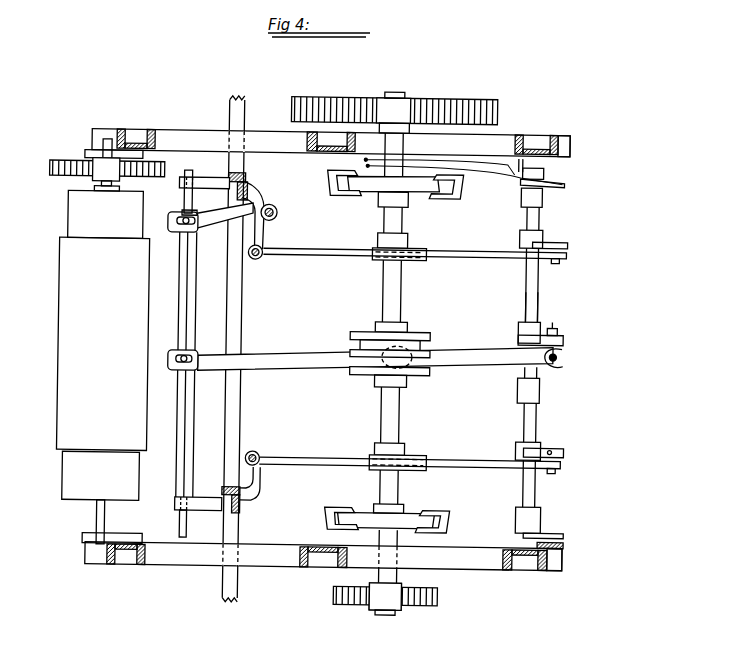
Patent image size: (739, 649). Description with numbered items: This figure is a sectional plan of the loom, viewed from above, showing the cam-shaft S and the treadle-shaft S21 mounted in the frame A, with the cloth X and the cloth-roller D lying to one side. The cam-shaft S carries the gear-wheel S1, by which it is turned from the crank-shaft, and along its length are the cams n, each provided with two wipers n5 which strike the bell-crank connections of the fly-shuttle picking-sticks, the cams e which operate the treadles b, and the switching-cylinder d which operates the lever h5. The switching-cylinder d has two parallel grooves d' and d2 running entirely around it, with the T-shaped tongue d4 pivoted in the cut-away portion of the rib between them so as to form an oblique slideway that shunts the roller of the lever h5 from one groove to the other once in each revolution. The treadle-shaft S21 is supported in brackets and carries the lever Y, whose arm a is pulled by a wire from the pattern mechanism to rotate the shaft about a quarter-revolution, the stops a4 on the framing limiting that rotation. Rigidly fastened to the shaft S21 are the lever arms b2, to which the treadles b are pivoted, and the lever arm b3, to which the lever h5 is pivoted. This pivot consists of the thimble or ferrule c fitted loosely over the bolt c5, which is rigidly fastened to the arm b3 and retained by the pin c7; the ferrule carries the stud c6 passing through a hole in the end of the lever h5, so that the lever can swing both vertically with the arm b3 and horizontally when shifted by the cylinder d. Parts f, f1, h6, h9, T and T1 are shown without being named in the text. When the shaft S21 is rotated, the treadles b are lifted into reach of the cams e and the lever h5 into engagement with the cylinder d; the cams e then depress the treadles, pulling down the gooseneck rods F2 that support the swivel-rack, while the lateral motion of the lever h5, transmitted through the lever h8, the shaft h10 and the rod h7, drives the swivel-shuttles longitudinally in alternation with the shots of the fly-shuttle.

The frame A is at (498, 141).
The gear-wheel S1 is at (440, 105).
The cam-shaft S is at (382, 286).
The stops a4 is at (548, 147).
The arm of lever Y a is at (562, 182).
The lever Y is at (512, 189).
The cams n is at (366, 189).
The wipers n5 is at (330, 178).
The cams e is at (414, 252).
The treadles b is at (478, 261).
The lever arms b2 is at (546, 246).
The lever arm b3 is at (567, 336).
The treadle-shaft S21 is at (544, 300).
The thimble or ferrule c is at (562, 358).
The bolt c5 is at (553, 325).
The stud c6 is at (565, 349).
The pin c7 is at (555, 368).
The switching-cylinder d is at (391, 345).
The groove d2 is at (345, 343).
The groove d' is at (368, 369).
The T-shaped tongue d4 is at (372, 371).
The plate f is at (546, 532).
The screw f1 is at (567, 544).
The lever h5 is at (472, 349).
The slotted end h6 is at (177, 377).
The rod h7 is at (183, 264).
The lever h8 is at (278, 212).
The plate h9 is at (180, 189).
The shaft h10 is at (276, 218).
The collar T is at (247, 186).
The curved arm T1 is at (260, 197).
The gooseneck rods F2 is at (262, 259).
The cloth X is at (105, 294).
The cloth-roller D is at (102, 497).